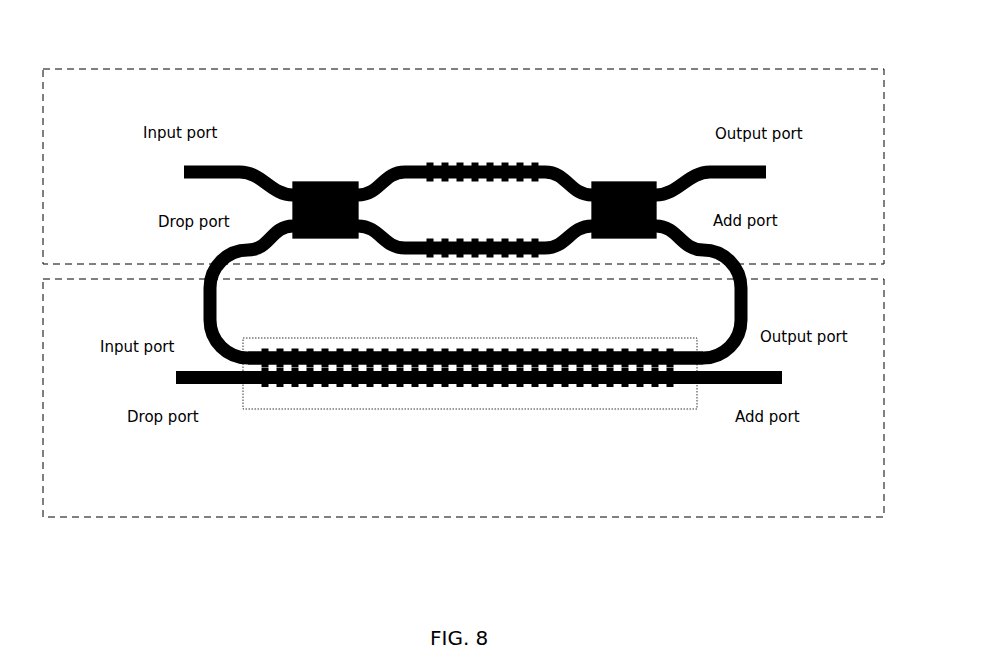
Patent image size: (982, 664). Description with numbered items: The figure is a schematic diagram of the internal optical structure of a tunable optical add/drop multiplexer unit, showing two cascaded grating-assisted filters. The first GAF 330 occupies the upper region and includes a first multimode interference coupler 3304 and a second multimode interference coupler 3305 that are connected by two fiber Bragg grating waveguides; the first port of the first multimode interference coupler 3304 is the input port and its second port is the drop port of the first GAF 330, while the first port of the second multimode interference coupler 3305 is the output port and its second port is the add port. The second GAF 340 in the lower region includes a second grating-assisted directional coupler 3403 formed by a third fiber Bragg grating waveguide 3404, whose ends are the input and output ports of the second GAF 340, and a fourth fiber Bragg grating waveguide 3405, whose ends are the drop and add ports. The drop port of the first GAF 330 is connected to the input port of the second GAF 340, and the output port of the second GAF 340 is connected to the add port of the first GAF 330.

The first GAF 330 is at (512, 69).
The second GAF 340 is at (533, 518).
The first multimode interference coupler 3304 is at (322, 181).
The second multimode interference coupler 3305 is at (618, 181).
The second grating-assisted directional coupler 3403 is at (312, 337).
The third fiber Bragg grating waveguide 3404 is at (498, 352).
The fourth fiber Bragg grating waveguide 3405 is at (593, 372).